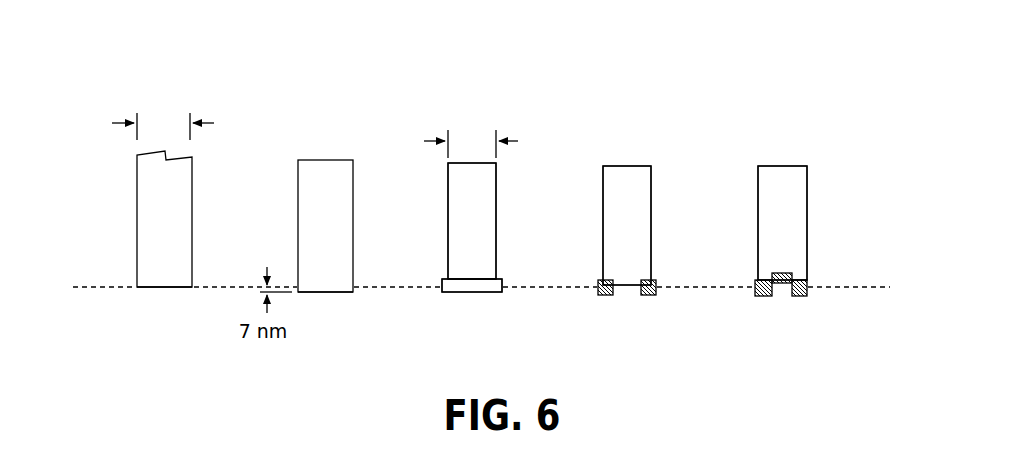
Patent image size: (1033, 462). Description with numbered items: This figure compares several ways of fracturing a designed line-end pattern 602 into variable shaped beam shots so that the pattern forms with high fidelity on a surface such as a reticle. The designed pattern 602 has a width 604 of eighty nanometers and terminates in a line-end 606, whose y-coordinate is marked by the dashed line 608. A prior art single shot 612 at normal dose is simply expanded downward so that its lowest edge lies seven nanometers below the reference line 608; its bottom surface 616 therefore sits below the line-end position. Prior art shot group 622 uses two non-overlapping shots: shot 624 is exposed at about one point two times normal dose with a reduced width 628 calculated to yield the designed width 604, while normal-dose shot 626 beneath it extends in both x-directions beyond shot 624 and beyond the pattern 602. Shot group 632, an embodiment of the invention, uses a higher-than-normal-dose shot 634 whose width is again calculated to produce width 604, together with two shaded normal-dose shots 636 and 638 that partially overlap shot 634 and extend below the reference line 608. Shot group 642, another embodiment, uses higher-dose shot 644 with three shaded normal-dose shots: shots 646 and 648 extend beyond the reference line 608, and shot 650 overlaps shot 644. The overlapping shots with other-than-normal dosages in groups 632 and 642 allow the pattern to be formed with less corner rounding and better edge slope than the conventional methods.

The designed line-end pattern 602 is at (137, 200).
The width 604 is at (145, 126).
The line-end 606 is at (163, 289).
The dashed line 608 is at (96, 290).
The pattern 612 is at (298, 182).
The fin bottom surface 616 is at (332, 293).
The shot group 622 is at (411, 85).
The shot 624 is at (448, 238).
The shot 626 is at (457, 293).
The width 628 is at (453, 144).
The shot group 632 is at (586, 85).
The shot 634 is at (603, 233).
The shot 636 is at (605, 296).
The shot 638 is at (650, 296).
The shot group 642 is at (735, 88).
The shot 644 is at (758, 233).
The shot 646 is at (763, 297).
The shot 648 is at (806, 297).
The shot 650 is at (782, 297).